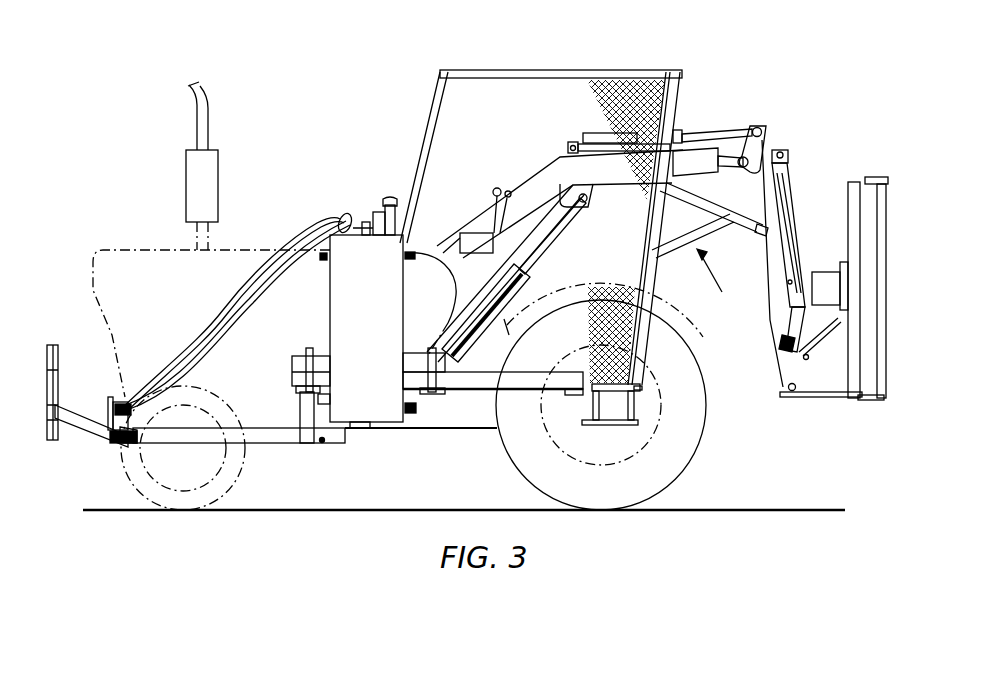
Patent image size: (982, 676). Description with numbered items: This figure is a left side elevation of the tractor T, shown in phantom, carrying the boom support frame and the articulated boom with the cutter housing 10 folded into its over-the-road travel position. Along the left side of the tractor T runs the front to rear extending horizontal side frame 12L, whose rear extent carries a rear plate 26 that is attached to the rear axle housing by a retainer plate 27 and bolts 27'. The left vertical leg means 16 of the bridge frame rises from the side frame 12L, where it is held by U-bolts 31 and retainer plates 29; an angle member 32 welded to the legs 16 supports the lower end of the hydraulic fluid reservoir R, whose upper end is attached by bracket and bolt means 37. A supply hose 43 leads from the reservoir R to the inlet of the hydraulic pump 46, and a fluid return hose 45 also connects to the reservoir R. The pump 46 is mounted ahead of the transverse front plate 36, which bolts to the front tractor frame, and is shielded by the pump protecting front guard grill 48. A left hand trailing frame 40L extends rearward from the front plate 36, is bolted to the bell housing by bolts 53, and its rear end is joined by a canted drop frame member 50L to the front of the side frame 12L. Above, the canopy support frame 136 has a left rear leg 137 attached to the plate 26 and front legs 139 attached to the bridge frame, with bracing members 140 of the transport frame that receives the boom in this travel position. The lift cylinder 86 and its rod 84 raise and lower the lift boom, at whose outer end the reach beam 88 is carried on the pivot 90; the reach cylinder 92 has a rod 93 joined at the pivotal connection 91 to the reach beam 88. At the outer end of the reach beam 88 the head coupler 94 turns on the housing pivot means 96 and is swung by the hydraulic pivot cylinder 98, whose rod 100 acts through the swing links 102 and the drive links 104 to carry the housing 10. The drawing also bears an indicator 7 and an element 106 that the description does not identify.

The view direction arrow 7 is at (722, 292).
The housing 10 is at (856, 180).
The left front to rear extending horizontal side frame 12L is at (527, 389).
The left vertical leg means 16 is at (360, 436).
The rear plates 26 is at (572, 395).
The retainer plates 27 is at (611, 423).
The bolts 27' is at (665, 398).
The retainer plates 29 is at (330, 403).
The U-bolts 31 is at (305, 365).
The angle member 32 is at (412, 413).
The transverse front plate 36 is at (118, 445).
The bracket and bolt means 37 is at (412, 252).
The left hand trailing frame 40L is at (290, 444).
The supply hose 43 is at (222, 318).
The fluid return hose 45 is at (276, 283).
The hydraulic pump 46 is at (118, 398).
The pump protecting front guard grill 48 is at (52, 345).
The canted drop frame member 50L is at (300, 412).
The bolts 53 is at (322, 445).
The rod 84 is at (549, 240).
The lift cylinder 86 is at (463, 345).
The reach beam 88 is at (784, 335).
The pivot 90 is at (765, 140).
The pivotal connection 91 is at (760, 128).
The reach cylinder 92 is at (680, 133).
The rod 93 is at (720, 133).
The head coupler 94 is at (812, 398).
The housing pivot means 96 is at (788, 390).
The hydraulic pivot cylinder 98 is at (797, 198).
The rod 100 is at (790, 282).
The swing links 102 is at (780, 345).
The drive links 104 is at (800, 322).
The control box 106 is at (826, 272).
The canopy support frame 136 is at (656, 67).
The left rear leg 137 is at (646, 276).
The front legs 139 is at (422, 148).
The bracing members 140 is at (635, 347).
The hydraulic fluid reservoir R is at (373, 310).
The tractor T is at (257, 250).